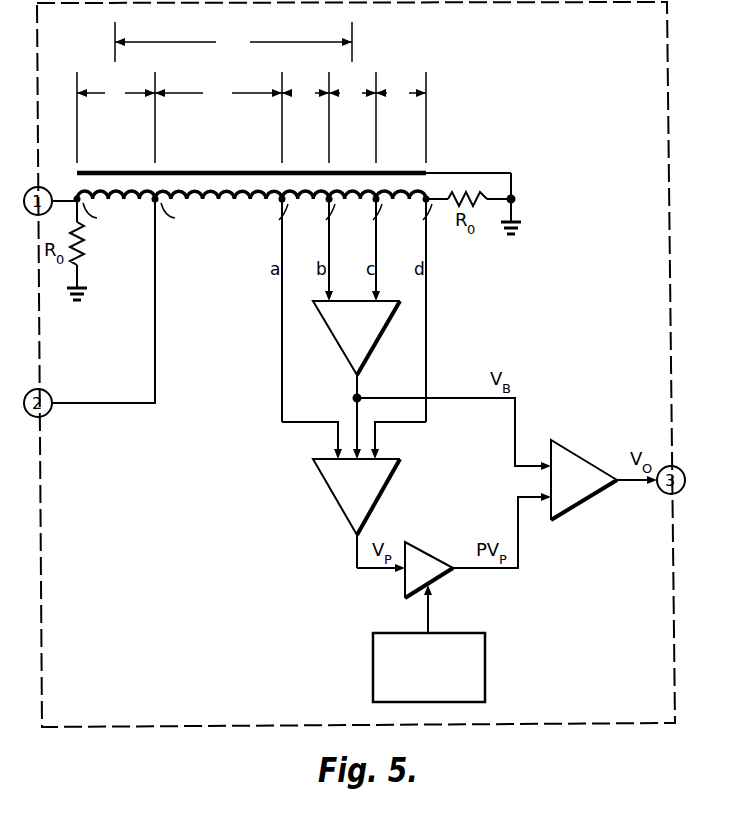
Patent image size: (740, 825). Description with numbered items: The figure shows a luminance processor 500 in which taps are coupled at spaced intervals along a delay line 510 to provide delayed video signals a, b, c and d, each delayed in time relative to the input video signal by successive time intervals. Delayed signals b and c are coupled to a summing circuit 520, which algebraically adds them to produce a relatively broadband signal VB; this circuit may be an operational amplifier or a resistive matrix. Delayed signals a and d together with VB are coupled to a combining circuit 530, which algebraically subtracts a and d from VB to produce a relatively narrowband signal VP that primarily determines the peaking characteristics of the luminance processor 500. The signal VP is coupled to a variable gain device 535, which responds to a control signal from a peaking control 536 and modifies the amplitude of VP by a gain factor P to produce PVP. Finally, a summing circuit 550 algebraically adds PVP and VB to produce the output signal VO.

The luminance processor 500 is at (186, 605).
The delay line 510 is at (240, 155).
The summing circuit 520 is at (343, 352).
The combining circuit 530 is at (337, 502).
The variable gain device 535 is at (403, 584).
The peaking control 536 is at (486, 662).
The summing circuit 550 is at (582, 505).